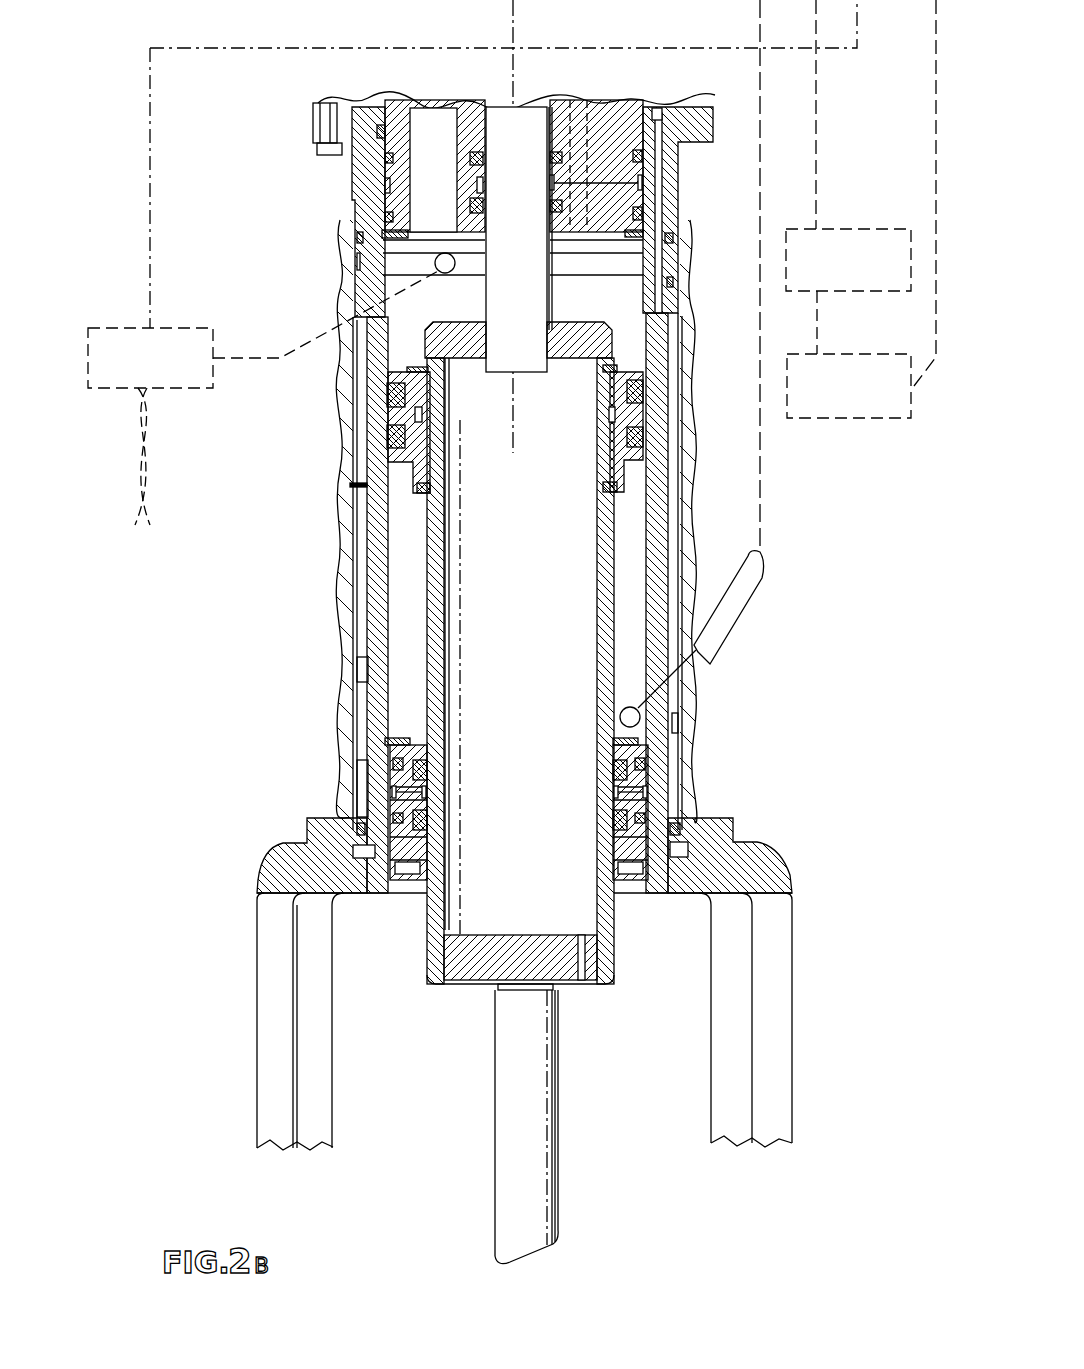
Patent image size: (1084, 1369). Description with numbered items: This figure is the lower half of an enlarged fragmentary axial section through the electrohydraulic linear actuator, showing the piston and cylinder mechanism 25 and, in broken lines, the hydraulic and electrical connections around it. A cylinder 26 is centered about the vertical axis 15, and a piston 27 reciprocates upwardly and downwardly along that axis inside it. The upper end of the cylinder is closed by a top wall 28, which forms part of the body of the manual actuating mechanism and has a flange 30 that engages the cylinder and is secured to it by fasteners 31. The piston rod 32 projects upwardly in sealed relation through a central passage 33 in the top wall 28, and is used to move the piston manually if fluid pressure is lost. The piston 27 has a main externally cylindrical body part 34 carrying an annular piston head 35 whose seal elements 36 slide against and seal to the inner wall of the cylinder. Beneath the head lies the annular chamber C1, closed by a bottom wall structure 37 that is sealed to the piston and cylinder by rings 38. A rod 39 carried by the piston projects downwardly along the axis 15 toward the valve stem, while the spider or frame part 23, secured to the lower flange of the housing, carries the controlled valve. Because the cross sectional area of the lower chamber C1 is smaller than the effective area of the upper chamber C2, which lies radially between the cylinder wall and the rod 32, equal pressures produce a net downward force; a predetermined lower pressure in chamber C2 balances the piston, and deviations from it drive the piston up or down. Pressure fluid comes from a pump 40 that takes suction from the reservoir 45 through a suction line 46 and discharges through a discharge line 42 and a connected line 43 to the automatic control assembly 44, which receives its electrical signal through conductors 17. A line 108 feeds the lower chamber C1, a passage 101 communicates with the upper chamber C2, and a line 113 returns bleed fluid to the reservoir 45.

The vertical axis 15 is at (511, 62).
The conductors 17 is at (140, 460).
The spider or frame part 23 is at (782, 1040).
The piston and cylinder mechanism 25 is at (352, 485).
The cylinder 26 is at (378, 533).
The piston 27 is at (432, 572).
The top wall 28 is at (620, 123).
The flange 30 is at (357, 103).
The fasteners 31 is at (322, 130).
The piston rod 32 is at (540, 296).
The central passage 33 is at (492, 141).
The main externally cylindrical body part 34 is at (392, 622).
The annular piston head 35 is at (420, 415).
The seal elements 36 is at (388, 438).
The bottom wall structure 37 is at (640, 778).
The rings 38 is at (617, 777).
The rod 39 is at (550, 1047).
The pump 40 is at (850, 229).
The discharge line 42 is at (816, 86).
The connected line 43 is at (858, 22).
The automatic control assembly 44 is at (193, 328).
The sump or reservoir 45 is at (884, 418).
The suction line 46 is at (820, 318).
The passage 101 is at (583, 96).
The line 108 is at (759, 134).
The line 113 is at (936, 90).
The annular chamber C1 is at (630, 605).
The upper chamber C2 is at (434, 305).